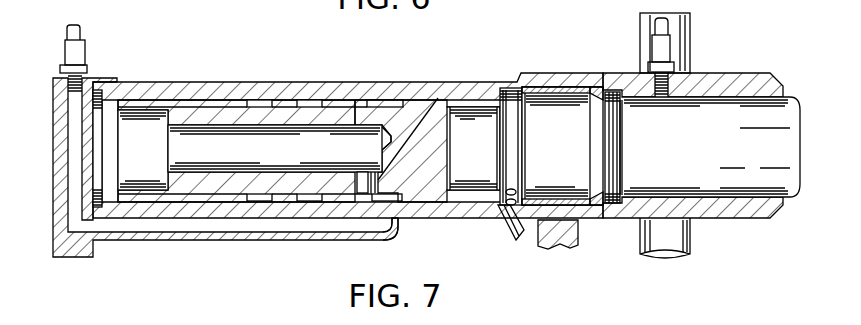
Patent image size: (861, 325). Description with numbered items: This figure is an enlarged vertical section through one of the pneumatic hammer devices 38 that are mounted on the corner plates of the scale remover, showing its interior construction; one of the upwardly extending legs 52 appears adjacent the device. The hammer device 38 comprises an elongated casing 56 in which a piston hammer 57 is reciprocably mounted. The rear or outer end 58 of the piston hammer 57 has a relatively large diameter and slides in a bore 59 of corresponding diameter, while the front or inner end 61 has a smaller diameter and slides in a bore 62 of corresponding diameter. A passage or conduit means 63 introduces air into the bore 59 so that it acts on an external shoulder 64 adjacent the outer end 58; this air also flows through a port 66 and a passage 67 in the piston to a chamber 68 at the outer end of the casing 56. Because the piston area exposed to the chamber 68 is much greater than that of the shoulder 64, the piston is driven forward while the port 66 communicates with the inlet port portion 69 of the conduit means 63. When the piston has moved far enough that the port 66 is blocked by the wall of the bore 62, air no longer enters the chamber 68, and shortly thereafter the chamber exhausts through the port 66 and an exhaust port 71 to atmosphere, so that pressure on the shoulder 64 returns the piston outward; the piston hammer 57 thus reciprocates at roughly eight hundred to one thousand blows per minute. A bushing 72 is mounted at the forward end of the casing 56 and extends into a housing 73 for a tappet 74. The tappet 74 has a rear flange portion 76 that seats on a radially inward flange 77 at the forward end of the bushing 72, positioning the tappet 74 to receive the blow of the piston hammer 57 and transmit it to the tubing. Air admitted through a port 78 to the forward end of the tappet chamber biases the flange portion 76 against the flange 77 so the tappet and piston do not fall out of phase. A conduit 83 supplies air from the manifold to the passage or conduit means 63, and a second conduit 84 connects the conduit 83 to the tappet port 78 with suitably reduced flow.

The pneumatic hammer device 38 is at (461, 74).
The leg 52 is at (692, 26).
The casing 56 is at (302, 81).
The piston hammer 57 is at (240, 100).
The outer end of piston hammer 58 is at (152, 99).
The bore 59 is at (183, 105).
The inner end of piston hammer 61 is at (418, 103).
The bore 62 is at (474, 192).
The passage or conduit means 63 is at (73, 167).
The external shoulder 64 is at (224, 105).
The port 66 is at (372, 185).
The passage 67 is at (262, 160).
The chamber 68 is at (107, 110).
The inlet port portion 69 is at (391, 242).
The exhaust port 71 is at (529, 223).
The bushing 72 is at (558, 88).
The housing 73 is at (727, 73).
The tappet 74 is at (731, 154).
The rear flange portion 76 is at (612, 167).
The flange 77 is at (613, 96).
The port 78 is at (668, 93).
The conduit 83 is at (72, 27).
The second conduit 84 is at (326, 317).